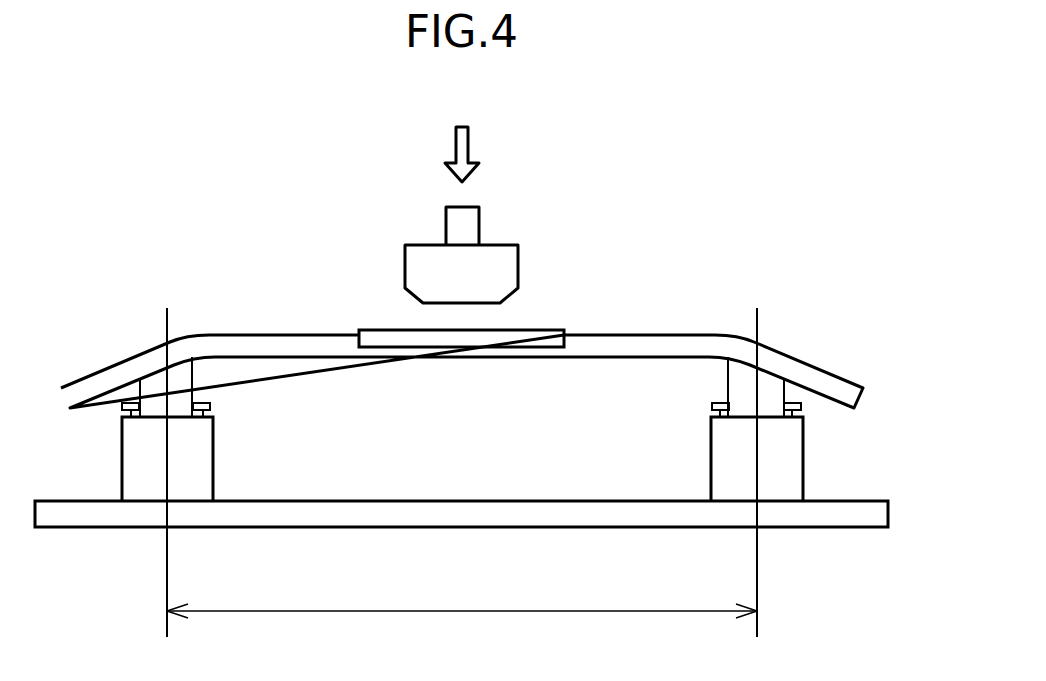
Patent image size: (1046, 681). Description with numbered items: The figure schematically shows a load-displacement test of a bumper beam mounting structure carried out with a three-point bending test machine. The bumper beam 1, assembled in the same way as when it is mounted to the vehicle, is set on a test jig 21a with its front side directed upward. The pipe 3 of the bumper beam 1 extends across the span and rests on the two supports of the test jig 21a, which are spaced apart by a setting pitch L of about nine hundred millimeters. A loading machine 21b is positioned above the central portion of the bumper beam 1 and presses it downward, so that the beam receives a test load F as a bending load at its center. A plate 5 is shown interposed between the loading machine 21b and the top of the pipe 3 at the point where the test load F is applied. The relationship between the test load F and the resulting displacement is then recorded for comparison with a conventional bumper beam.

The bumper beam 1 is at (462, 339).
The pipe 3 is at (266, 335).
The plate 5 is at (543, 330).
The test jig 21a is at (833, 513).
The loading machine 21b is at (502, 266).
The test load F is at (465, 152).
The setting pitch L is at (462, 472).